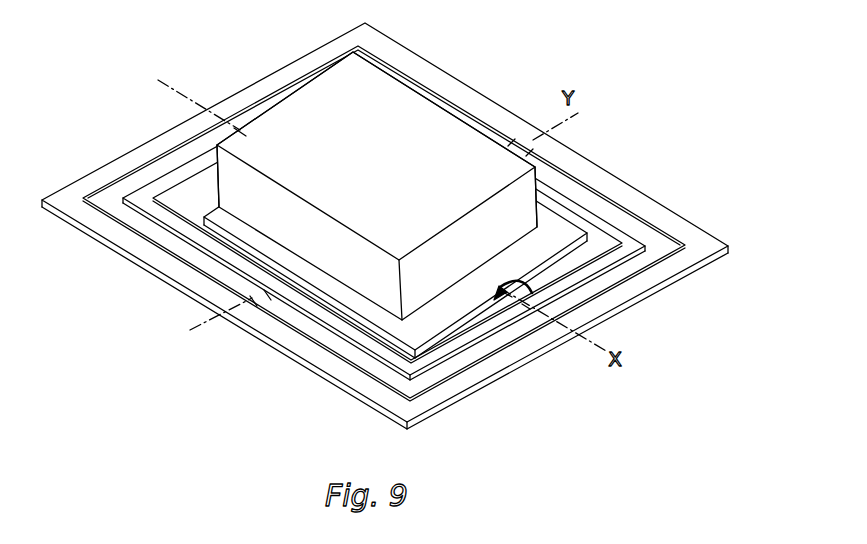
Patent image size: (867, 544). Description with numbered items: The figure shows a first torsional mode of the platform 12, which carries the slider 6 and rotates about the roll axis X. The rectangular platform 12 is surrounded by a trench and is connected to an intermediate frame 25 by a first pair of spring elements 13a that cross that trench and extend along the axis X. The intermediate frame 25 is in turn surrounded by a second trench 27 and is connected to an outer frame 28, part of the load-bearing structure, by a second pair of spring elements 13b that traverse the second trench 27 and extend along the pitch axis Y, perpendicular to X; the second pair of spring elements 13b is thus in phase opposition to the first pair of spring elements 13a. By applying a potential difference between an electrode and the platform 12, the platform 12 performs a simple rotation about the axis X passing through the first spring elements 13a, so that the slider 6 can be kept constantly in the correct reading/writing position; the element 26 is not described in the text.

The slider 6 is at (406, 182).
The platform 12 is at (553, 227).
The first pair of spring elements 13a is at (523, 354).
The second pair of spring elements 13b is at (383, 277).
The intermediate frame 25 is at (406, 224).
The inner slit 26 is at (592, 249).
The second trench 27 is at (384, 245).
The outer frame 28 is at (668, 218).